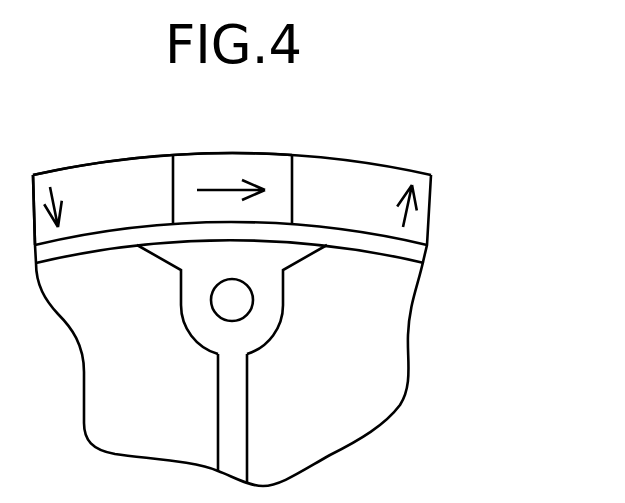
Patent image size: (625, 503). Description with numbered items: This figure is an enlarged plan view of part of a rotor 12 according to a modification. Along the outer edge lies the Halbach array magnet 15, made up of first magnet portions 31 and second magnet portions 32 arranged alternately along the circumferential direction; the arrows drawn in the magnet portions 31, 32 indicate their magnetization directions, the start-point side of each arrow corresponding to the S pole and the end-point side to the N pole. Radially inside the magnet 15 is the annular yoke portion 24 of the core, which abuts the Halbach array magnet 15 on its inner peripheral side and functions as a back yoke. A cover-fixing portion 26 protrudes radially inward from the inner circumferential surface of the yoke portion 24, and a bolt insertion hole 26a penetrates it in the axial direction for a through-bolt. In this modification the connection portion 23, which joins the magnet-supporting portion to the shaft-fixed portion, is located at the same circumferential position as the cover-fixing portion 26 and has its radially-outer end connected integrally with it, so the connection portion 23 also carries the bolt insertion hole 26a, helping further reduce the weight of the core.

The rotor 12 is at (389, 164).
The Halbach array magnet 15 is at (73, 166).
The first magnet portion 31 is at (133, 168).
The second magnet portion 32 is at (232, 160).
The connection portion 23 is at (247, 400).
The yoke portion 24 is at (95, 249).
The cover-fixing portion 26 is at (187, 333).
The bolt insertion hole 26a is at (240, 307).